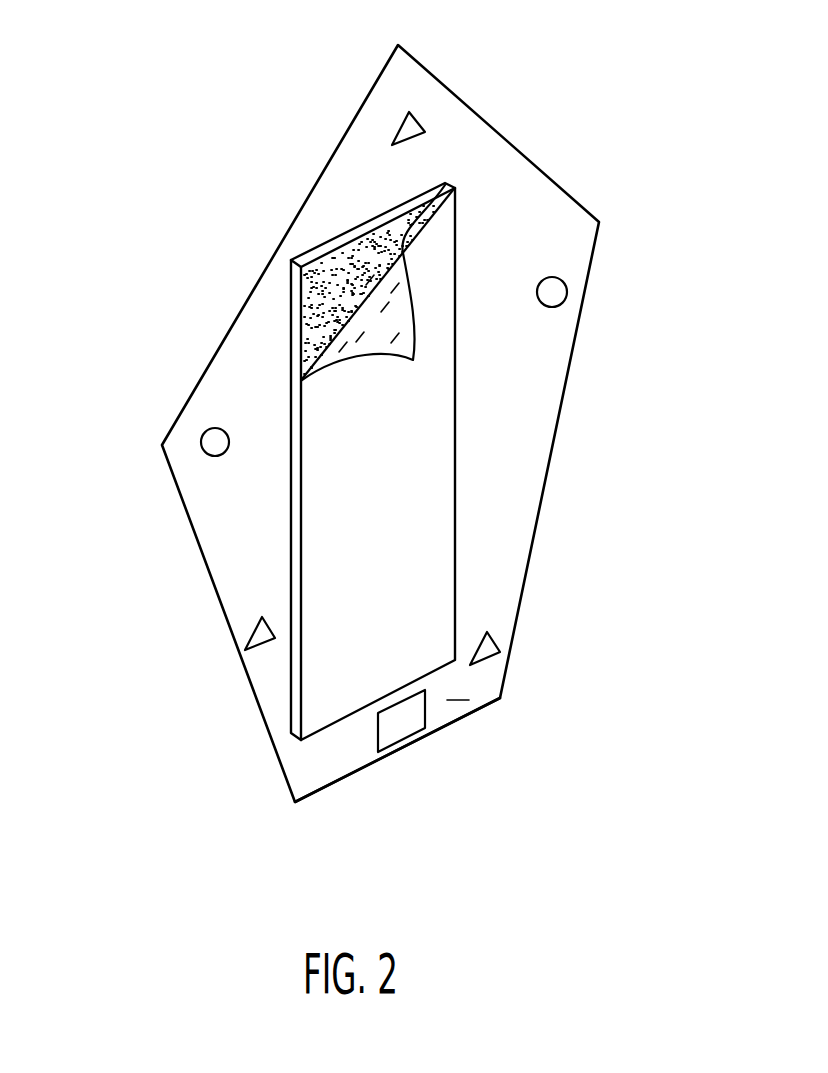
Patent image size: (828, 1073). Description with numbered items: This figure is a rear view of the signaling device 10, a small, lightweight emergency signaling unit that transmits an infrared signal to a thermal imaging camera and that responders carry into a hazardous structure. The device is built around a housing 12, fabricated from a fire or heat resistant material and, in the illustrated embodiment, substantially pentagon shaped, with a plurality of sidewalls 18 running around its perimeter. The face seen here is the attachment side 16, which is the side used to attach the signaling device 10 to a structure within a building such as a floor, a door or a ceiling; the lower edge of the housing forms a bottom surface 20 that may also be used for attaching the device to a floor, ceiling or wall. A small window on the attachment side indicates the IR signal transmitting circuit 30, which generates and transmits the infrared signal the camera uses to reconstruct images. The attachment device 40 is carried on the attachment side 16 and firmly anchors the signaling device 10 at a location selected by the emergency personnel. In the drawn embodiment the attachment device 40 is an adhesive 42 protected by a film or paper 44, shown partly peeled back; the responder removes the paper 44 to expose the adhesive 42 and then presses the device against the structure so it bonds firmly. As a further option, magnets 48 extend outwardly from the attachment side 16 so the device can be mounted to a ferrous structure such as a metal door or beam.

The signaling device 10 is at (385, 455).
The housing 12 is at (387, 467).
The attachment side 16 is at (458, 688).
The sidewalls 18 is at (297, 218).
The bottom surface 20 is at (358, 772).
The IR signal transmitting circuit 30 is at (380, 733).
The attachment device 40 is at (516, 377).
The adhesive 42 is at (350, 398).
The film or paper 44 is at (387, 328).
The magnets 48 is at (215, 440).